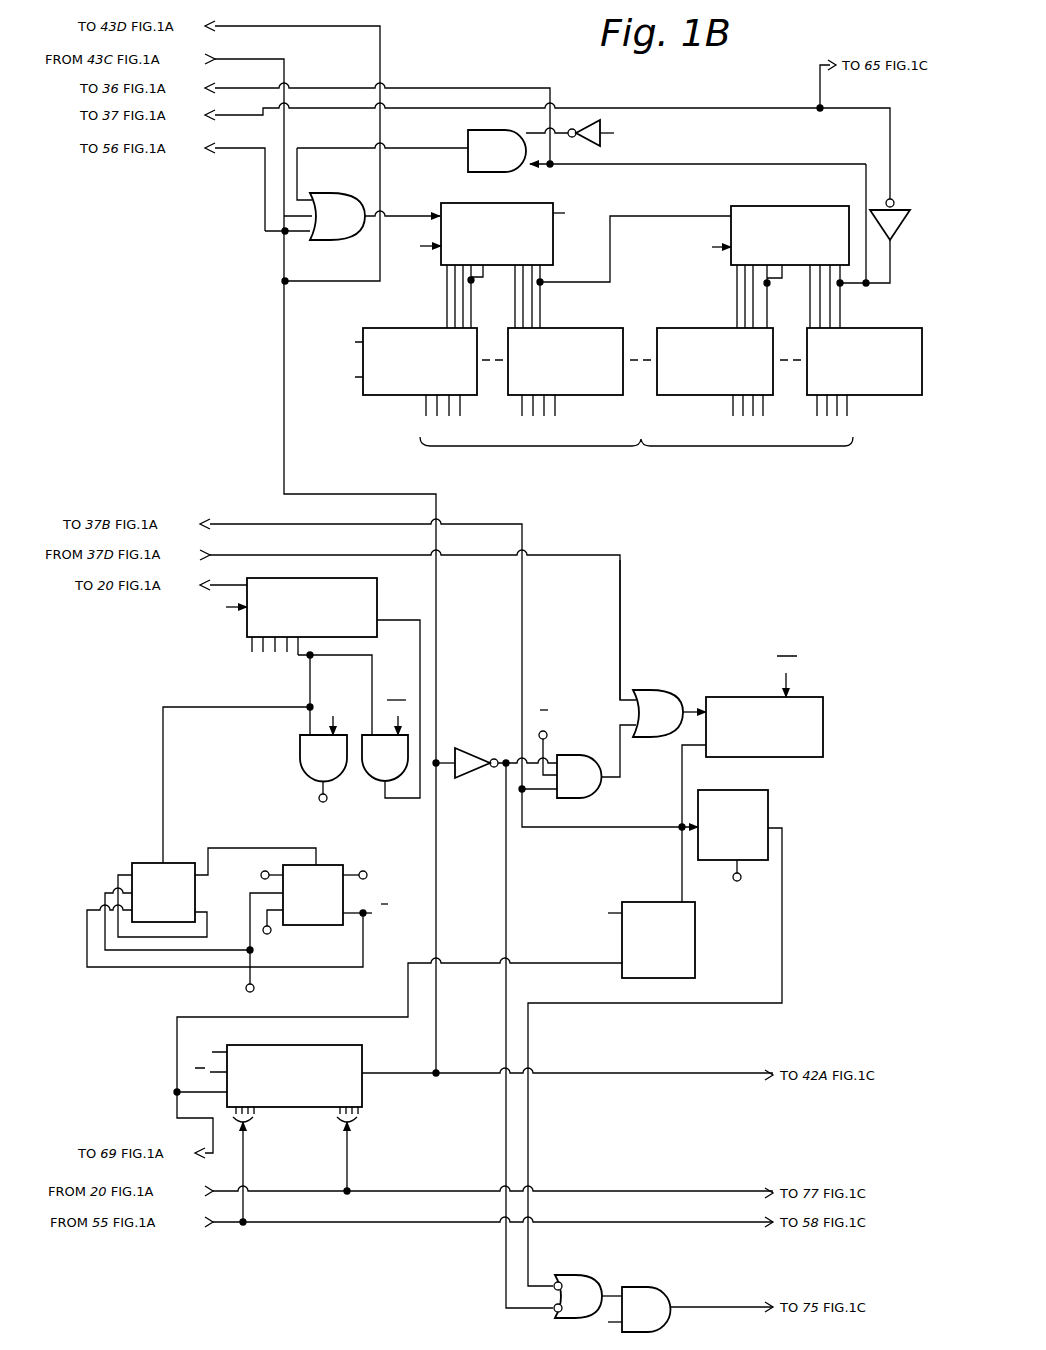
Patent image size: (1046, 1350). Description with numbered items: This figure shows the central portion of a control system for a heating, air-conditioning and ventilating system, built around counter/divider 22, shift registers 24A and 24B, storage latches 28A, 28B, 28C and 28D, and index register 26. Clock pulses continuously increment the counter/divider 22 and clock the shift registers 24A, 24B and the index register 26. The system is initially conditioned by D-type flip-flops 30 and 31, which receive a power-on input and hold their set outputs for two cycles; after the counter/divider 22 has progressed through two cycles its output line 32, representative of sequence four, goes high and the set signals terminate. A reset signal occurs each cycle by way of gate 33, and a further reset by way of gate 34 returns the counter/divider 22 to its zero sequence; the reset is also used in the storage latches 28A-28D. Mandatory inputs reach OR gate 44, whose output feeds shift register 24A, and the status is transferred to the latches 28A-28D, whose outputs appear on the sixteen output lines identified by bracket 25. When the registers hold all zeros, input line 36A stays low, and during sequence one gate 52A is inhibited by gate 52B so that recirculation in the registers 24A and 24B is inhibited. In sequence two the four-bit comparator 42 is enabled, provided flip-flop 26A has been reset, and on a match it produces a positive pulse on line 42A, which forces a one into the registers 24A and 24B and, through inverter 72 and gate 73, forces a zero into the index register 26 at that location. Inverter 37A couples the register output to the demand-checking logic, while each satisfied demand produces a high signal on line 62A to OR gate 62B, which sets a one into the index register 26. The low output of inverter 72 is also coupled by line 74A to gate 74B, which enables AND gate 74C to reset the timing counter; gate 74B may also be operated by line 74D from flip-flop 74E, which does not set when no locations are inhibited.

The line 42A is at (380, 58).
The input line 36A is at (440, 88).
The gate 52A is at (432, 150).
The gate 52B is at (600, 150).
The OR gate 44 is at (362, 194).
The shift register 24A is at (460, 203).
The shift register 24B is at (760, 206).
The inverter 37A is at (901, 224).
The storage latch 28A is at (417, 327).
The storage latch 28B is at (614, 327).
The storage latch 28C is at (690, 327).
The storage latch 28D is at (890, 327).
The bracket 25 is at (636, 454).
The counter/divider 22 is at (243, 626).
The output line 32 is at (231, 716).
The gate 33 is at (323, 759).
The gate 34 is at (385, 740).
The D-type flip-flop 30 is at (225, 907).
The D-type flip-flop 31 is at (306, 936).
The inverter 72 is at (471, 748).
The gate 73 is at (579, 754).
The line 62A is at (620, 606).
The OR gate 62B is at (655, 690).
The index register 26 is at (828, 718).
The flip-flop 74E is at (758, 815).
The line 74D is at (783, 907).
The flip-flop 26A is at (676, 950).
The four-bit comparator 42 is at (385, 1098).
The line 74A is at (504, 1258).
The gate 74B is at (578, 1275).
The AND gate 74C is at (678, 1310).